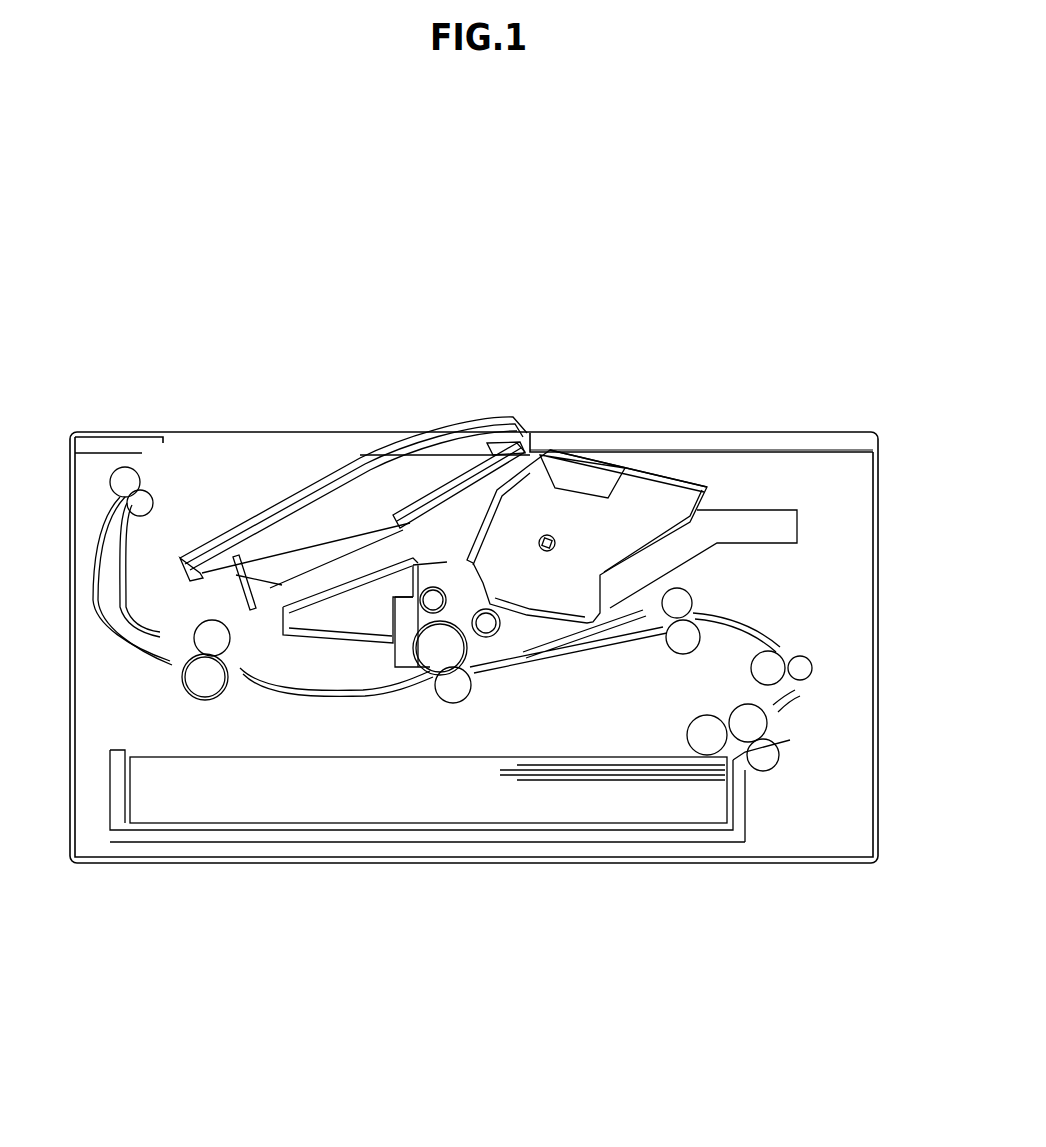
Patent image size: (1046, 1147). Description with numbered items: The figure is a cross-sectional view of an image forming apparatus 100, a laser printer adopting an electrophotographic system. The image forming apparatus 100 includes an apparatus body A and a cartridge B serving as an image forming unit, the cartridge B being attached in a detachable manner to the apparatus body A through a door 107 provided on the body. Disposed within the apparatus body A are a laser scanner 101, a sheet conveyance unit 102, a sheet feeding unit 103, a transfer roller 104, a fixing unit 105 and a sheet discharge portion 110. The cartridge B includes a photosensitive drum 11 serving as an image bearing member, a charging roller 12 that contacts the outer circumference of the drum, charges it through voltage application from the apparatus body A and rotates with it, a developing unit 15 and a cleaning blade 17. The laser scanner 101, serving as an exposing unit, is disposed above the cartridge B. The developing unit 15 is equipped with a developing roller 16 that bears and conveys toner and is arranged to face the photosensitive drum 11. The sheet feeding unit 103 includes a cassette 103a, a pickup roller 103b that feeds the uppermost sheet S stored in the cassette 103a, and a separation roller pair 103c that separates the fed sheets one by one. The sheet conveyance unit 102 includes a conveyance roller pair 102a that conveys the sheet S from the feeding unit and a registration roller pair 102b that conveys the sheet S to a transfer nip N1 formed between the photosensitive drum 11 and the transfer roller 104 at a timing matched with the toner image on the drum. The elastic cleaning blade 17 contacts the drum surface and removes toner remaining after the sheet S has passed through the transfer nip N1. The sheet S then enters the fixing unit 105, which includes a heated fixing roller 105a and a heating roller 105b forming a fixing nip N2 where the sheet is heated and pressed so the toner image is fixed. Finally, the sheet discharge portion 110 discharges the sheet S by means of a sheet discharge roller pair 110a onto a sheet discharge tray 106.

The image forming apparatus 100 is at (497, 262).
The apparatus body A is at (803, 424).
The cartridge B is at (622, 451).
The door 107 is at (677, 446).
The sheet discharge portion 110 is at (132, 492).
The sheet discharge roller pair 110a is at (147, 470).
The fixing roller 105a is at (213, 628).
The fixing unit 105 is at (188, 690).
The heating roller 105b is at (176, 755).
The fixing nip N2 is at (200, 714).
The sheet discharge tray 106 is at (279, 500).
The laser scanner 101 is at (353, 528).
The charging roller 12 is at (478, 470).
The developing unit 15 is at (533, 500).
The photosensitive drum 11 is at (440, 650).
The transfer roller 104 is at (453, 684).
The transfer nip N1 is at (466, 672).
The developing roller 16 is at (487, 637).
The cleaning blade 17 is at (398, 666).
The registration roller pair 102b is at (683, 610).
The sheet conveyance unit 102 is at (765, 613).
The conveyance roller pair 102a is at (793, 668).
The sheet S is at (663, 770).
The sheet feeding unit 103 is at (688, 845).
The cassette 103a is at (717, 837).
The pickup roller 103b is at (710, 748).
The separation roller pair 103c is at (765, 757).